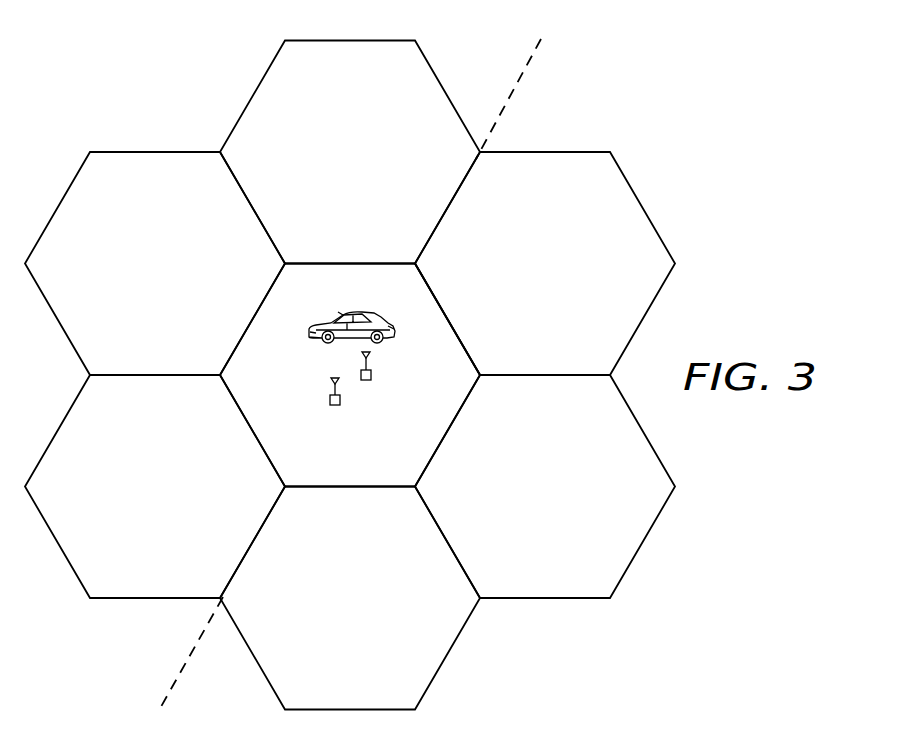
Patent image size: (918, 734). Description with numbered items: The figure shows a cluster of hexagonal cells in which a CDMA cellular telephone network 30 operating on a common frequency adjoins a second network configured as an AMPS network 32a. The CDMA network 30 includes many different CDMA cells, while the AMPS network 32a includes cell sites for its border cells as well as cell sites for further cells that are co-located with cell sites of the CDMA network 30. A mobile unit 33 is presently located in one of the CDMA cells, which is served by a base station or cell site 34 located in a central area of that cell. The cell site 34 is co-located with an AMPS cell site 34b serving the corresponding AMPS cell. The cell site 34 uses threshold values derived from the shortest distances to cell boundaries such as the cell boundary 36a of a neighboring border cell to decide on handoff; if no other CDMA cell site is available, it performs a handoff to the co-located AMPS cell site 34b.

The CDMA cellular telephone network 30 is at (492, 88).
The AMPS network 32a is at (562, 118).
The mobile unit 33 is at (375, 318).
The cell site 34 is at (329, 401).
The AMPS cell site 34b is at (372, 377).
The cell boundary 36a is at (440, 304).